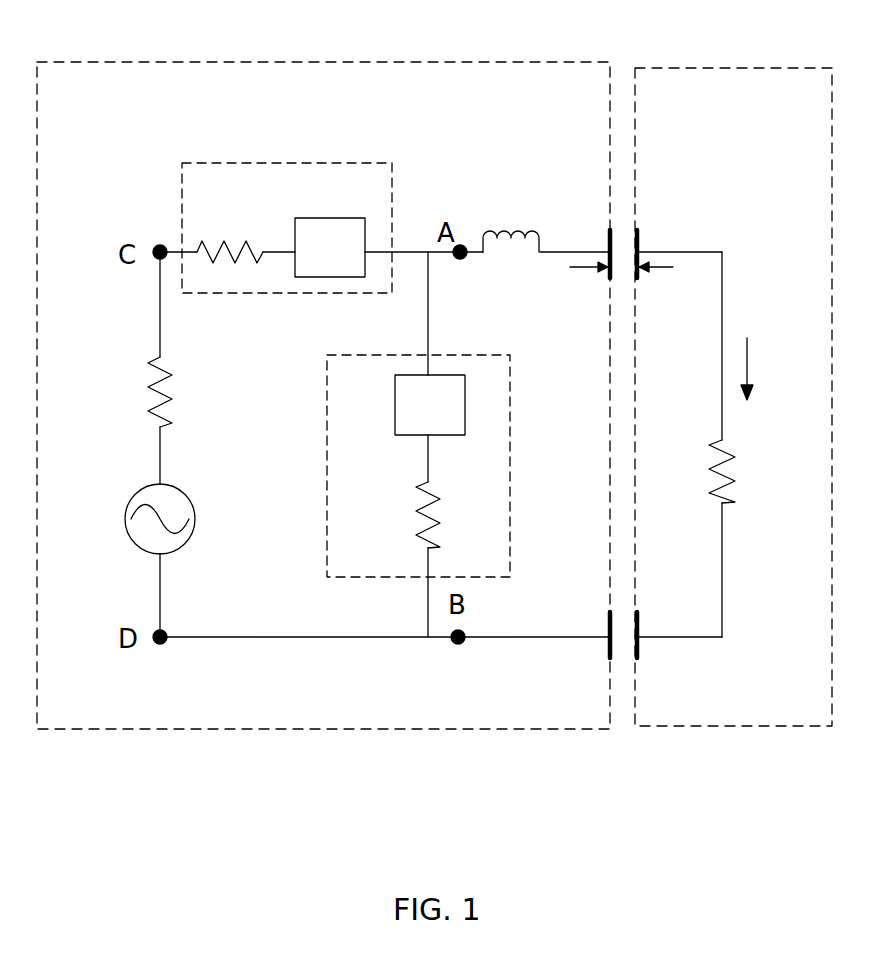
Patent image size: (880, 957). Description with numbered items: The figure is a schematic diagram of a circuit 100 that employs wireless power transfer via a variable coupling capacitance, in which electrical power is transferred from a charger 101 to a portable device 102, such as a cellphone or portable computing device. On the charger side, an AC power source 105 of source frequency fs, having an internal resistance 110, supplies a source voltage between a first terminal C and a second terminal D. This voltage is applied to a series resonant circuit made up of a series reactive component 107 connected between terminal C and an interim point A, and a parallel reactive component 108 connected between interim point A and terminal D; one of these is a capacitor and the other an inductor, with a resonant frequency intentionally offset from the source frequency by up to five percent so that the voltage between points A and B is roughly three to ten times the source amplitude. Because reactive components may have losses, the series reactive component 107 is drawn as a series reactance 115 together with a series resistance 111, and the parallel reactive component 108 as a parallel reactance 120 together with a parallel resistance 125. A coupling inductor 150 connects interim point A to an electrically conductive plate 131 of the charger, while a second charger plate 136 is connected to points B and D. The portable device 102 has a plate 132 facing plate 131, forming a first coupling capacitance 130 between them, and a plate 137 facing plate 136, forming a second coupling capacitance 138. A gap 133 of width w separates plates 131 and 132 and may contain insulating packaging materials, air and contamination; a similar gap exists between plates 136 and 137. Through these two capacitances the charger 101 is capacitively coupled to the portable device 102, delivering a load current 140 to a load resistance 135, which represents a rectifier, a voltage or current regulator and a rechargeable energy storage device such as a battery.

The circuit 100 is at (638, 44).
The charger 101 is at (193, 735).
The portable device 102 is at (737, 732).
The AC power source 105 is at (137, 485).
The series reactive component 107 is at (287, 200).
The parallel reactive component 108 is at (384, 453).
The internal resistance Rs1 110 is at (142, 363).
The resistance Rs2 111 is at (232, 237).
The reactance Xs 115 is at (357, 212).
The reactance Xp 120 is at (390, 398).
The resistance Rp 125 is at (410, 535).
The capacitance 2Cc 130 is at (611, 297).
The plate 131 is at (623, 259).
The plate 132 is at (640, 276).
The gap 133 is at (622, 282).
The load resistance RL 135 is at (712, 442).
The plate 136 is at (602, 620).
The plate 137 is at (647, 620).
The capacitance 2Cc 138 is at (611, 634).
The current IL 140 is at (787, 353).
The inductor Lcc 150 is at (520, 224).